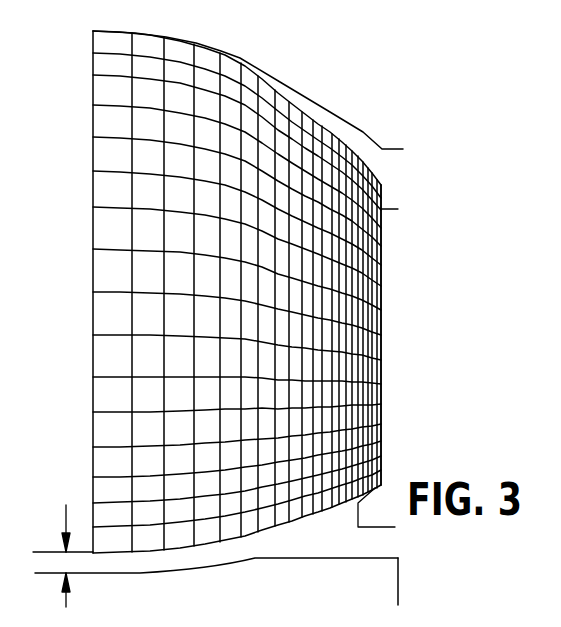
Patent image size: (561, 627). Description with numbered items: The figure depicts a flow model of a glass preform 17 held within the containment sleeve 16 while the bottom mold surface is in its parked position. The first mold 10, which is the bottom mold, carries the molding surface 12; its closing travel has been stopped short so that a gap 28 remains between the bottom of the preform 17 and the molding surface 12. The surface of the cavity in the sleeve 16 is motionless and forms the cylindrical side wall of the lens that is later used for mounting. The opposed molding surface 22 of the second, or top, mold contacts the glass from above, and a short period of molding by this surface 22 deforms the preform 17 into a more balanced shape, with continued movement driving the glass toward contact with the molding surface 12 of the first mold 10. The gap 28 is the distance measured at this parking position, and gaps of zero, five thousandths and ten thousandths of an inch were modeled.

The first mold 10 is at (398, 580).
The molding surface 12 is at (190, 569).
The containment sleeve 16 is at (382, 325).
The glass preform 17 is at (93, 278).
The opposed molding surface 22 is at (363, 133).
The gap 28 is at (60, 557).